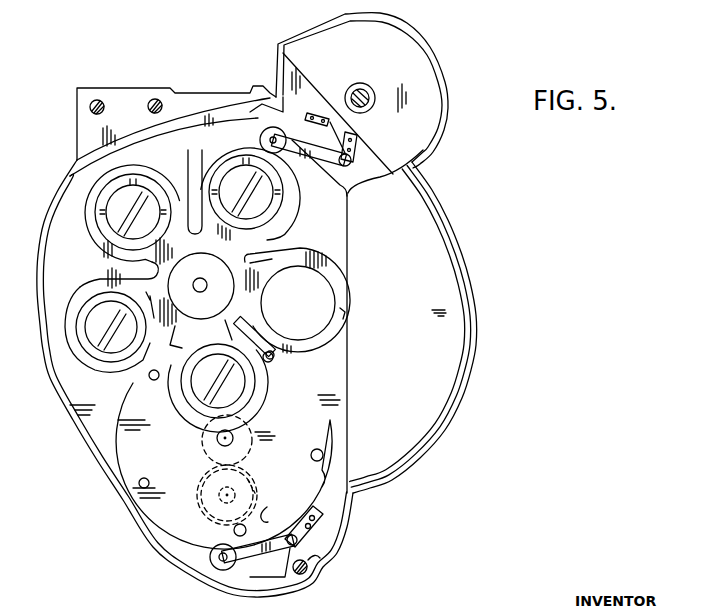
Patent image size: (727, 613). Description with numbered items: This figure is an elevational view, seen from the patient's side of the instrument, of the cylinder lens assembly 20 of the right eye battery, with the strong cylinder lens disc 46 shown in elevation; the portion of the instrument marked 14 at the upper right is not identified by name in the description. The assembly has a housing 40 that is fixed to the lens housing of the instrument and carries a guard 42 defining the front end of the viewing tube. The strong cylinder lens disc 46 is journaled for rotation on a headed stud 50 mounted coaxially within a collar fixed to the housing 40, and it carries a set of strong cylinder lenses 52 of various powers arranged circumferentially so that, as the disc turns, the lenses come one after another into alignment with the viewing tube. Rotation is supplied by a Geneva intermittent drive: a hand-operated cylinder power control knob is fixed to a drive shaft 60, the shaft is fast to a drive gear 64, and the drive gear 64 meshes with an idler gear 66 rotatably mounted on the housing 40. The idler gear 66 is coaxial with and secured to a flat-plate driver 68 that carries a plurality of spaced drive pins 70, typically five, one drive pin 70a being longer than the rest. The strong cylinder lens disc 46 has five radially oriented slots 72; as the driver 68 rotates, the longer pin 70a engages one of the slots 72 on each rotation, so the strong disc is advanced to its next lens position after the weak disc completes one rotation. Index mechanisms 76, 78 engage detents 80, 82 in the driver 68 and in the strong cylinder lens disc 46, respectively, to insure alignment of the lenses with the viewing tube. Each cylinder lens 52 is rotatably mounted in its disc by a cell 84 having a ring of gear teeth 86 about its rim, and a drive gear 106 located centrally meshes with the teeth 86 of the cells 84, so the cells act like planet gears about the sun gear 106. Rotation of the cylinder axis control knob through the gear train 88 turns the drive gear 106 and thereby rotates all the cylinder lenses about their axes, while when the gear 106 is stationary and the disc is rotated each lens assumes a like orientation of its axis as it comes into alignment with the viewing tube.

The head housing 14 is at (463, 76).
The cylinder lens assembly 20 is at (78, 212).
The housing 40 is at (455, 277).
The guard 42 is at (108, 332).
The strong cylinder lens disc 46 is at (320, 263).
The headed stud 50 is at (207, 287).
The strong cylinder lenses 52 is at (237, 178).
The drive shaft 60 is at (220, 495).
The drive gear 64 is at (249, 487).
The idler gear 66 is at (200, 445).
The flat-plate driver 68 is at (133, 436).
The drive pins 70 is at (270, 362).
The longer drive pin 70a is at (280, 509).
The slots 72 is at (279, 244).
The index mechanism 76 is at (222, 567).
The index mechanism 78 is at (308, 132).
The detents 80 is at (333, 470).
The detents 82 is at (100, 182).
The cell 84 is at (284, 203).
The gear teeth 86 is at (250, 230).
The gear train 88 is at (167, 250).
The drive gear 106 is at (196, 283).